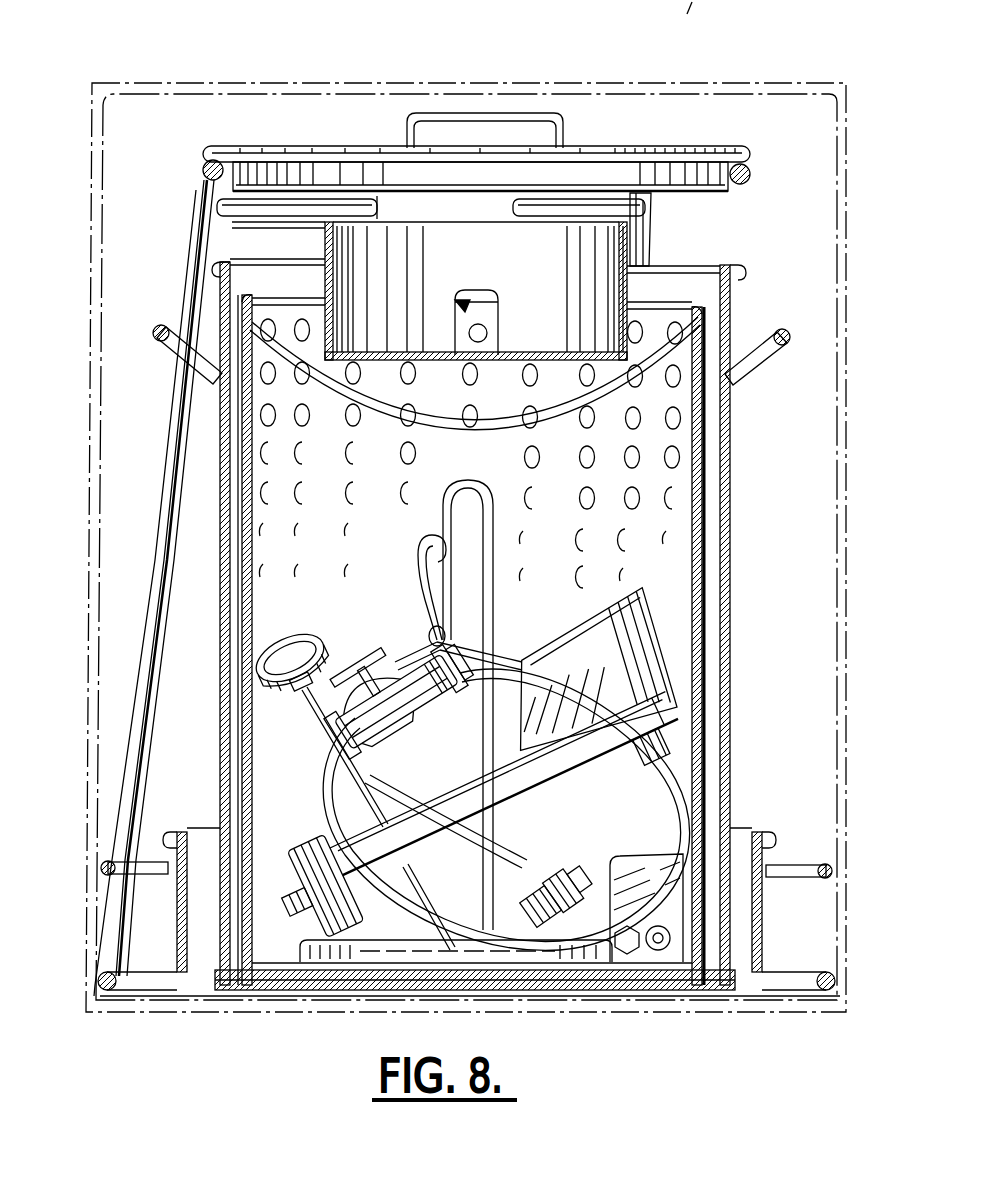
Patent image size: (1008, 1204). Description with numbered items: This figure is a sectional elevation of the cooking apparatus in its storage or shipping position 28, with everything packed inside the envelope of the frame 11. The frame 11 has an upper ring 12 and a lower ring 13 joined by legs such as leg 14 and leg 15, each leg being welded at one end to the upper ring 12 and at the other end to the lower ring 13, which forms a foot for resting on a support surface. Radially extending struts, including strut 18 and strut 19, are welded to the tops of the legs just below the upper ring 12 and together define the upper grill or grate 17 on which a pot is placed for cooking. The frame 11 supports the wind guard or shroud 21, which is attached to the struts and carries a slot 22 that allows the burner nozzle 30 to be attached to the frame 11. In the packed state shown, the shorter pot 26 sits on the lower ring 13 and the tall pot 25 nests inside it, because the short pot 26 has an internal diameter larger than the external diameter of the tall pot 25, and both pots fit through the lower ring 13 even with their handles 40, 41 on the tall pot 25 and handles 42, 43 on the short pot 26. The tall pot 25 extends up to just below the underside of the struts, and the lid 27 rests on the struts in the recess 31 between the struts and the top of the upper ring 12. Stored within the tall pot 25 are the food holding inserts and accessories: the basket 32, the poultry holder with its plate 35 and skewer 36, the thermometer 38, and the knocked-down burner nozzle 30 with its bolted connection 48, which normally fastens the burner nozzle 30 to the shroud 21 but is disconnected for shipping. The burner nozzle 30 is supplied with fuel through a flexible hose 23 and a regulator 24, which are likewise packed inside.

The frame 11 is at (155, 565).
The upper ring 12 is at (203, 170).
The lower ring 13 is at (93, 998).
The leg 14 is at (140, 741).
The leg 15 is at (651, 245).
The upper grill or grate 17 is at (377, 211).
The strut 18 is at (255, 222).
The strut 19 is at (513, 216).
The wind guard or shroud 21 is at (622, 290).
The slot 22 is at (457, 312).
The flexible hose 23 is at (292, 812).
The regulator 24 is at (420, 718).
The tall pot 25 is at (731, 798).
The short pot 26 is at (766, 944).
The lid 27 is at (302, 150).
The storage or shipping position 28 is at (125, 76).
The burner nozzle 30 is at (612, 683).
The recess 31 is at (233, 190).
The basket 32 is at (704, 490).
The plate 35 is at (380, 955).
The skewer 36 is at (482, 628).
The thermometer 38 is at (296, 638).
The handle 40 is at (160, 345).
The handle 41 is at (786, 332).
The handle 42 is at (108, 876).
The handle 43 is at (833, 873).
The bolted connection 48 is at (642, 945).